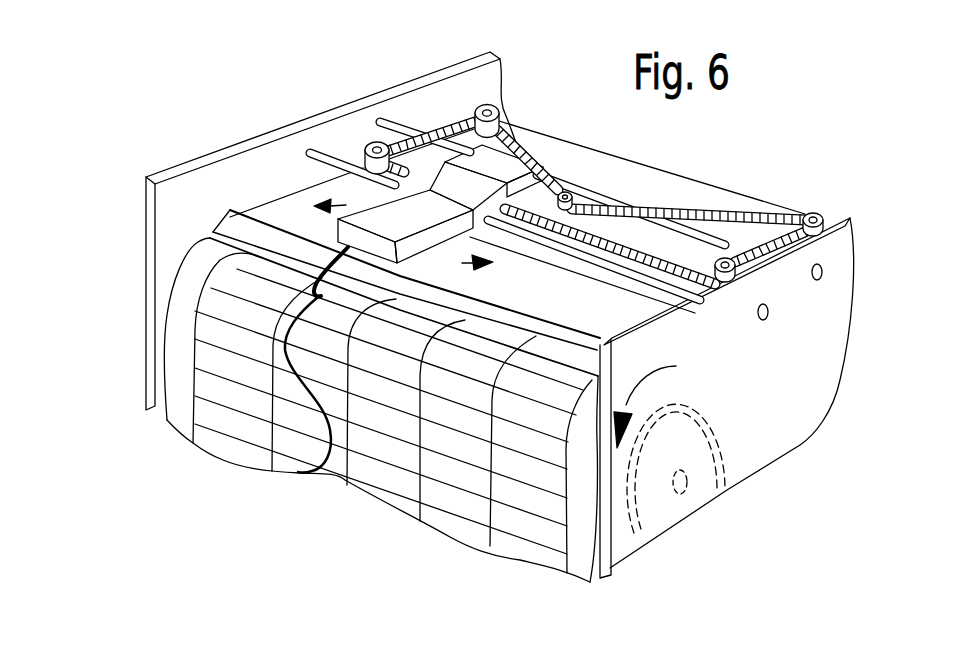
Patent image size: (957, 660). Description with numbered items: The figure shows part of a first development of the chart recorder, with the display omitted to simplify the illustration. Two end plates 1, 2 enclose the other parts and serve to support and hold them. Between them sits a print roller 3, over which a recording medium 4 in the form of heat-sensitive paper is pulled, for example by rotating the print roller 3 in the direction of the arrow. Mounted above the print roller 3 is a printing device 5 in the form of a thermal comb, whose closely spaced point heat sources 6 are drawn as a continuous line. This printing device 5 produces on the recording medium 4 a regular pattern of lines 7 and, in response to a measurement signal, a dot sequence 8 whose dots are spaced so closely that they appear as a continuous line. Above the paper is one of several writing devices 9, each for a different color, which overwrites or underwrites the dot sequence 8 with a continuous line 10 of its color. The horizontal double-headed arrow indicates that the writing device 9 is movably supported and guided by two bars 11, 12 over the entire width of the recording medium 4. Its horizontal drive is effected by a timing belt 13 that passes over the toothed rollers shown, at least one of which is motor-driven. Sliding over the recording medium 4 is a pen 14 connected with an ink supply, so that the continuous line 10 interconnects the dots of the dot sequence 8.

The end plate 1 is at (469, 70).
The end plate 2 is at (850, 222).
The print roller 3 is at (698, 470).
The recording medium 4 is at (400, 488).
The printing device 5 is at (280, 213).
The point heat sources 6 is at (220, 232).
The pattern of lines 7 is at (493, 503).
The dot sequence 8 is at (447, 302).
The writing device 9 is at (400, 208).
The continuous line 10 is at (322, 388).
The bar 11 is at (661, 257).
The bar 12 is at (727, 242).
The timing belt 13 is at (783, 212).
The pen 14 is at (265, 272).